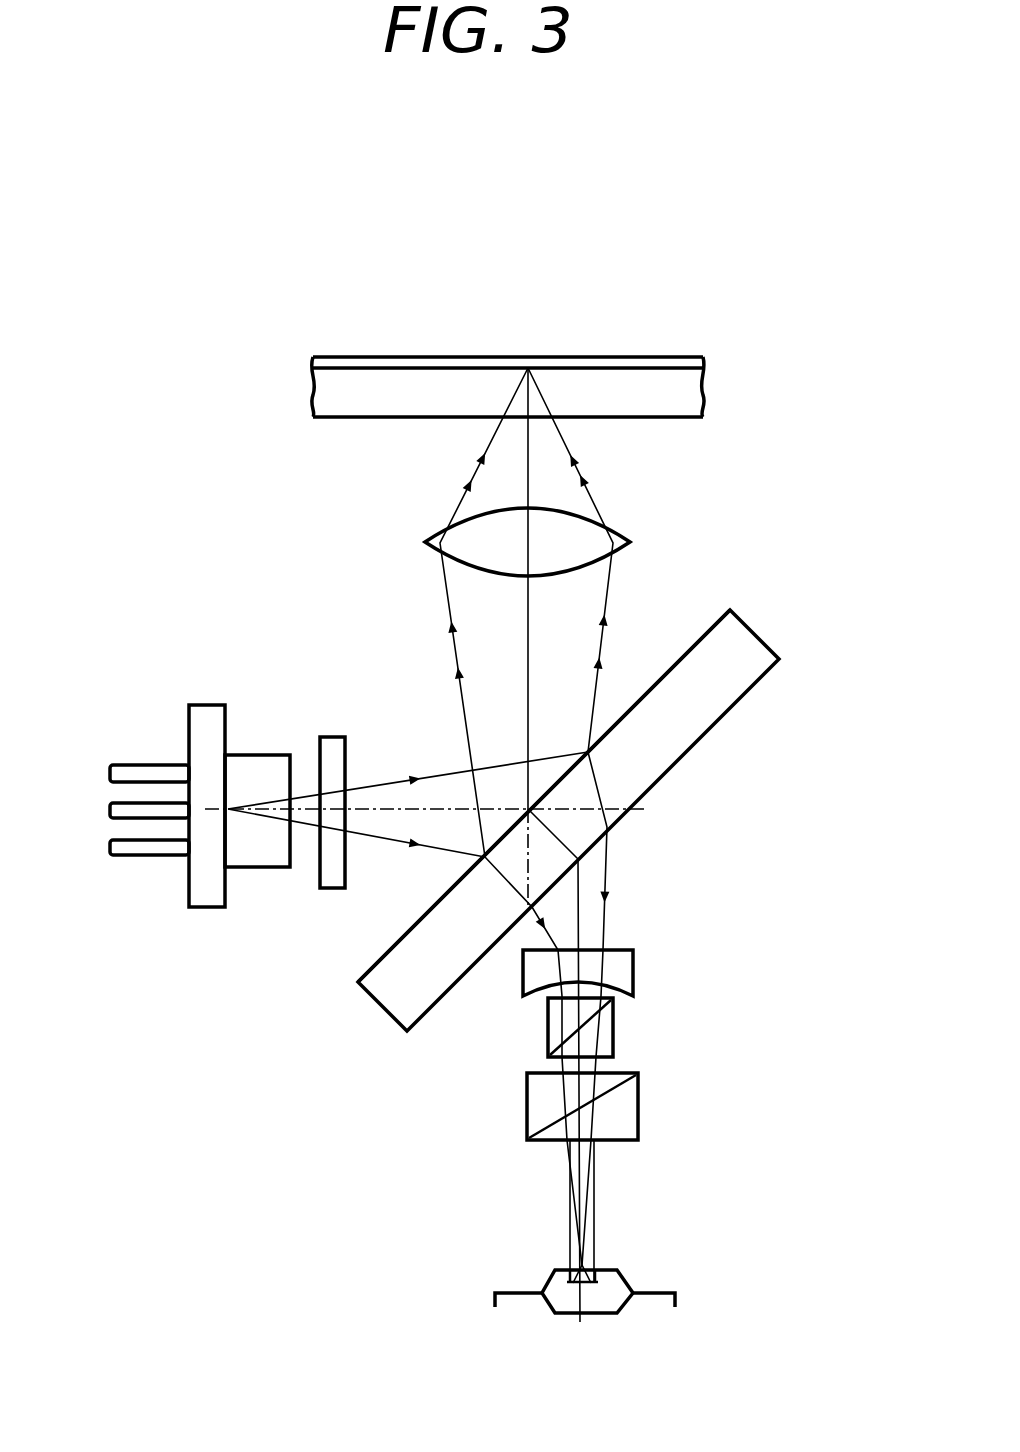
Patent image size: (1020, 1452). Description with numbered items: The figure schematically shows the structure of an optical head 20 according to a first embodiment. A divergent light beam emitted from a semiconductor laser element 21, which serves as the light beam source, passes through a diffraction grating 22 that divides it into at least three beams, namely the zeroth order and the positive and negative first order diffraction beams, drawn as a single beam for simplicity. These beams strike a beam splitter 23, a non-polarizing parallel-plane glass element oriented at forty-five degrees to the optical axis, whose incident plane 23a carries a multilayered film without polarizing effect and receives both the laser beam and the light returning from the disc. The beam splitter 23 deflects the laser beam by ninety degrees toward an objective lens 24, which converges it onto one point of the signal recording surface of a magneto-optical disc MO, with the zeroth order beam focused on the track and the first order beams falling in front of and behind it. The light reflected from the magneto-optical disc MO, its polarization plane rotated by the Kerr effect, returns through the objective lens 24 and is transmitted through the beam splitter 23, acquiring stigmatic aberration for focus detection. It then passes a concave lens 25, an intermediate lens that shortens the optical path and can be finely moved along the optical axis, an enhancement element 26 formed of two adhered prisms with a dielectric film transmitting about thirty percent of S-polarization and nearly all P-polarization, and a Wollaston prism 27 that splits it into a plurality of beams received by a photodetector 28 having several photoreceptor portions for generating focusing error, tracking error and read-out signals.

The optical head 20 is at (664, 346).
The magneto-optical disc MO is at (352, 378).
The semiconductor laser element 21 is at (253, 868).
The diffraction grating 22 is at (333, 740).
The beam splitter 23 is at (378, 1005).
The incident plane 23a is at (712, 622).
The objective lens 24 is at (600, 533).
The concave lens 25 is at (635, 962).
The enhancement element 26 is at (617, 1035).
The Wollaston prism 27 is at (642, 1110).
The photodetector 28 is at (618, 1270).